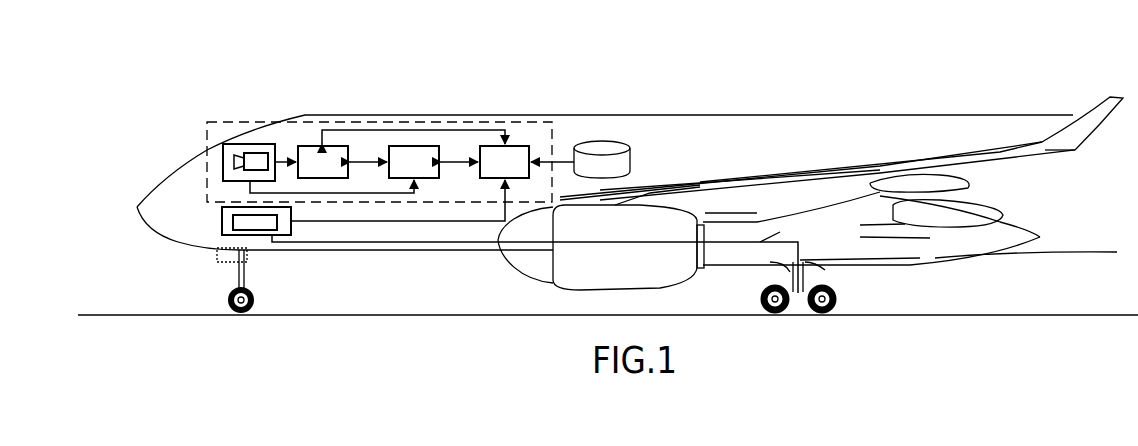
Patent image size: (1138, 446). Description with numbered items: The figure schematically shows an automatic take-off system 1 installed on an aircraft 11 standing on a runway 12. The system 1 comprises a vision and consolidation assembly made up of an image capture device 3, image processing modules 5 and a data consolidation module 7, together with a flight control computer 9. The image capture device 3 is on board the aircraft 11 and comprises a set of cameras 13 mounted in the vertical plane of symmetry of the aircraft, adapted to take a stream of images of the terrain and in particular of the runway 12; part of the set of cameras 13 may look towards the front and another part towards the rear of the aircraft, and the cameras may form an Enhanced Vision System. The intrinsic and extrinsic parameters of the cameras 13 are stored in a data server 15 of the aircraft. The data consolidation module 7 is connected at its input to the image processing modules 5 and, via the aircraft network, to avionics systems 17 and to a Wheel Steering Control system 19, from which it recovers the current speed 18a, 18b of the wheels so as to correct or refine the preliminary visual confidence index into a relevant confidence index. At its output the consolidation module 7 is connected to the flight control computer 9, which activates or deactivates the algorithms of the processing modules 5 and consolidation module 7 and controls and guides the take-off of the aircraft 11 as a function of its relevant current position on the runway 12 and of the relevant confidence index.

The automatic take-off system 1 is at (204, 140).
The image capture device 3 is at (231, 143).
The image processing modules 5 is at (415, 145).
The data consolidation module 7 is at (517, 145).
The flight control computer 9 is at (333, 145).
The aircraft 11 is at (673, 112).
The runway 12 is at (124, 312).
The set of cameras 13 is at (260, 152).
The data server 15 is at (631, 165).
The avionics systems 17 is at (222, 218).
The current speed of the wheels 18a is at (254, 300).
The current speed of the wheels 18b is at (838, 298).
The Wheel Steering Control system 19 is at (262, 222).